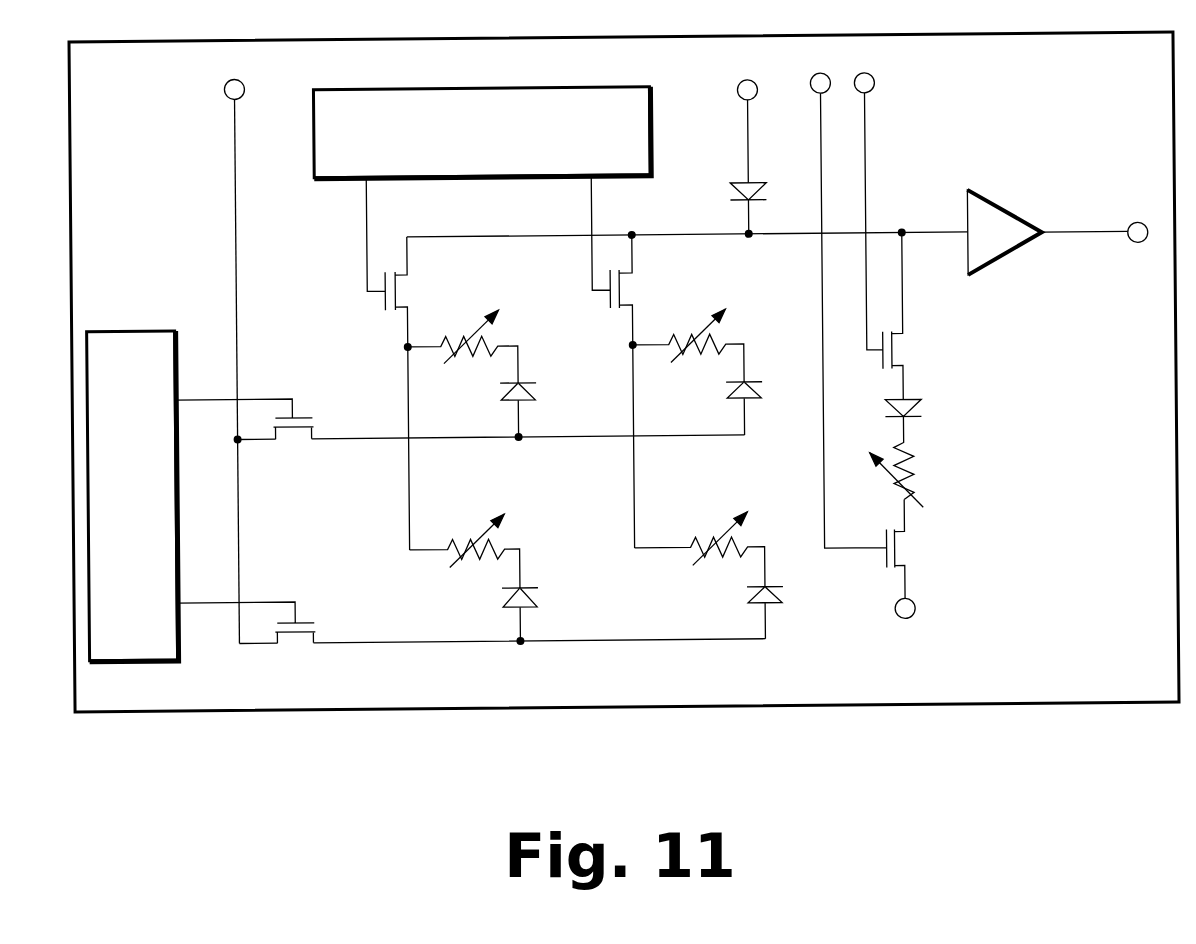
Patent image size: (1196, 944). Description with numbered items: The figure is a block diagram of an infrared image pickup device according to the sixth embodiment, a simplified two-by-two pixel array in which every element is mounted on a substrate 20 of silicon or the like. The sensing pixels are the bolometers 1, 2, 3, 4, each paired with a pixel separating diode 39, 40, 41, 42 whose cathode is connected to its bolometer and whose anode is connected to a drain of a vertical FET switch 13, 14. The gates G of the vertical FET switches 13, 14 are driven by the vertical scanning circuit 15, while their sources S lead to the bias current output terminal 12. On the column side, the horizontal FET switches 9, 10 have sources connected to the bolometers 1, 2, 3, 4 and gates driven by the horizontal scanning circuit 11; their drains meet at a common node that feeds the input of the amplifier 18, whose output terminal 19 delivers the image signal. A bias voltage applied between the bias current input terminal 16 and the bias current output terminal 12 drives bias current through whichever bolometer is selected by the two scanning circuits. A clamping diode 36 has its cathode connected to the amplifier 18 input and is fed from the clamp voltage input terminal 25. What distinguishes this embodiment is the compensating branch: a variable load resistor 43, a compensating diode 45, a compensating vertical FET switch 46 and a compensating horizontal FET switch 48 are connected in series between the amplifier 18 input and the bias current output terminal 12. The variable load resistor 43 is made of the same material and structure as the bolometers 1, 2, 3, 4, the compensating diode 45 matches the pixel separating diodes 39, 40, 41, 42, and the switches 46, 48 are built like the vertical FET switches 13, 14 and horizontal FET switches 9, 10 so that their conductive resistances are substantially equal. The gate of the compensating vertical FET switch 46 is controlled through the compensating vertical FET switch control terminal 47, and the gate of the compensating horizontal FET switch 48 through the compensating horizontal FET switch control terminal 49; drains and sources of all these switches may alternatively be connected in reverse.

The bolometer 1 is at (463, 324).
The bolometer 2 is at (688, 326).
The bolometer 3 is at (463, 532).
The bolometer 4 is at (708, 534).
The horizontal FET switch 9 is at (353, 273).
The horizontal FET switch 10 is at (596, 286).
The horizontal scanning circuit 11 is at (655, 175).
The bias current output terminal 12 is at (911, 616).
The vertical FET switch 13 is at (288, 387).
The vertical FET switch 14 is at (288, 588).
The vertical scanning circuit 15 is at (178, 648).
The bias current input terminal 16 is at (224, 93).
The amplifier 18 is at (1005, 224).
The output terminal 19 is at (1136, 230).
The substrate 20 is at (1100, 721).
The clamp voltage input terminal 25 is at (737, 96).
The clamping diode 36 is at (765, 199).
The pixel separating diode 39 is at (535, 391).
The pixel separating diode 40 is at (758, 408).
The pixel separating diode 41 is at (535, 600).
The pixel separating diode 42 is at (780, 598).
The variable load resistor 43 is at (928, 474).
The compensating diode 45 is at (928, 414).
The compensating vertical FET switch 46 is at (928, 354).
The compensating vertical FET switch control terminal 47 is at (874, 90).
The compensating horizontal FET switch 48 is at (941, 546).
The compensating horizontal FET switch control terminal 49 is at (813, 97).